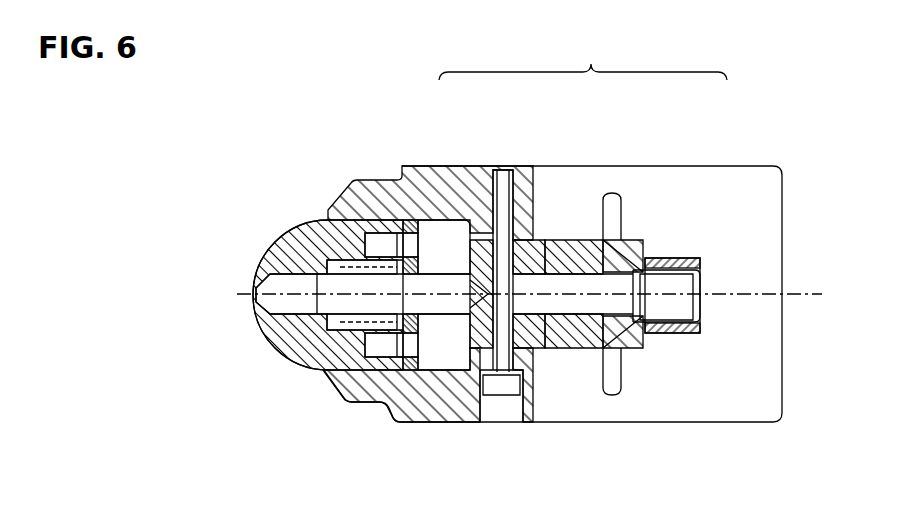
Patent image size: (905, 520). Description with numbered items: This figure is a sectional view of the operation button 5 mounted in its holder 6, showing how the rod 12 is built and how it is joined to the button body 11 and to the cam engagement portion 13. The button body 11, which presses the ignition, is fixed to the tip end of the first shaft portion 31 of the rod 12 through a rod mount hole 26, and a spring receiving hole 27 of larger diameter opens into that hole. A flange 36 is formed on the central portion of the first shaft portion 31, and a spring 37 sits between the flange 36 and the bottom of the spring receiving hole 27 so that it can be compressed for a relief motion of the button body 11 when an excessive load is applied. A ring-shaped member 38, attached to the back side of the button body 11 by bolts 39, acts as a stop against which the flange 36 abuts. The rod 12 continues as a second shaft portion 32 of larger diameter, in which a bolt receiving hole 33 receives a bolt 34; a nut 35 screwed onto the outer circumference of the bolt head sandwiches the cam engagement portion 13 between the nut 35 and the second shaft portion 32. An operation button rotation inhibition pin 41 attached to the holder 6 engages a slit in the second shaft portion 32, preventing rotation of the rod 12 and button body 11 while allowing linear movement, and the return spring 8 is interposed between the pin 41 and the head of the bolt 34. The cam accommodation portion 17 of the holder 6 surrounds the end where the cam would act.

The operation button 5 is at (212, 271).
The holder 6 is at (437, 414).
The spring 8 is at (549, 300).
The button body 11 is at (258, 256).
The rod 12 is at (583, 58).
The cam engagement portion 13 is at (612, 193).
The cam accommodation portion 17 is at (753, 173).
The rod mount hole 26 is at (284, 238).
The spring receiving hole 27 is at (340, 248).
The first shaft portion 31 is at (463, 200).
The second shaft portion 32 is at (538, 240).
The bolt receiving hole 33 is at (565, 252).
The bolt 34 is at (640, 240).
The nut 35 is at (687, 256).
The flange 36 is at (408, 222).
The spring 37 is at (372, 258).
The ring-shaped member 38 is at (413, 250).
The bolts 39 is at (382, 246).
The operation button rotation inhibition pin 41 is at (500, 182).